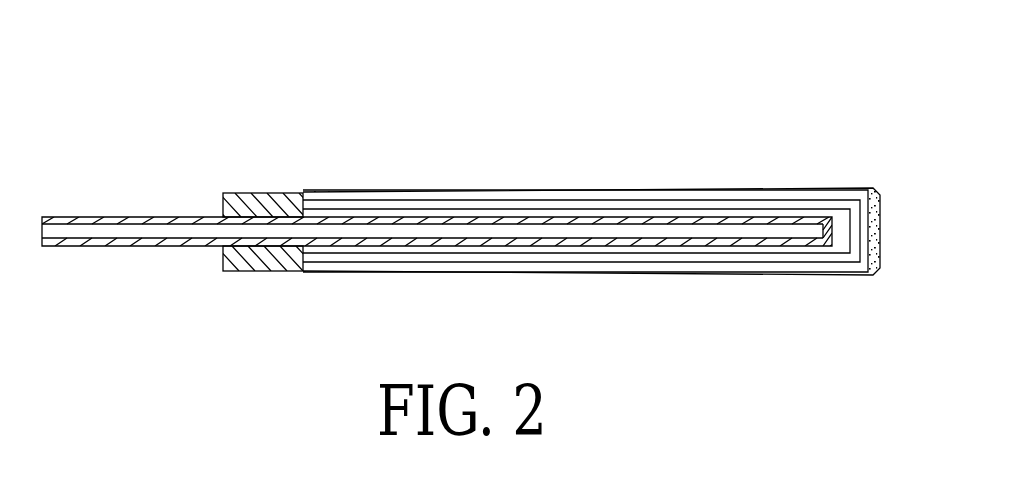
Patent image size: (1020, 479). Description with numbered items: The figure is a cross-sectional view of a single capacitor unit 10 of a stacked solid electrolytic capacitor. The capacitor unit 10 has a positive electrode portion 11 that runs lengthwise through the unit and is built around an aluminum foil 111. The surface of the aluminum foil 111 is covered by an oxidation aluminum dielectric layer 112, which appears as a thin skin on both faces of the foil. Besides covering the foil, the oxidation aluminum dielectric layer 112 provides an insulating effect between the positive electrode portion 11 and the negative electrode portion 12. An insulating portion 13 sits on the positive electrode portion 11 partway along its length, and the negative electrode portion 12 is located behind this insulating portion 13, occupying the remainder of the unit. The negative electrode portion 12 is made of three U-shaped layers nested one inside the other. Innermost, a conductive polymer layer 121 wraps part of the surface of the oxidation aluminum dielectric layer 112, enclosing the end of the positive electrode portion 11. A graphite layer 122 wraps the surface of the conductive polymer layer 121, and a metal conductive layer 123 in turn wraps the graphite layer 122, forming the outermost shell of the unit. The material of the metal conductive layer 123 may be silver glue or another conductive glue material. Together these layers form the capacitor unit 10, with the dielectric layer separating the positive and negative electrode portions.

The capacitor unit 10 is at (753, 161).
The positive electrode portion 11 is at (177, 112).
The aluminum foil 111 is at (163, 232).
The oxidation aluminum dielectric layer 112 is at (93, 217).
The negative electrode portion 12 is at (423, 82).
The conductive polymer layer 121 is at (415, 213).
The graphite layer 122 is at (493, 205).
The metal conductive layer 123 is at (565, 197).
The insulating portion 13 is at (268, 207).